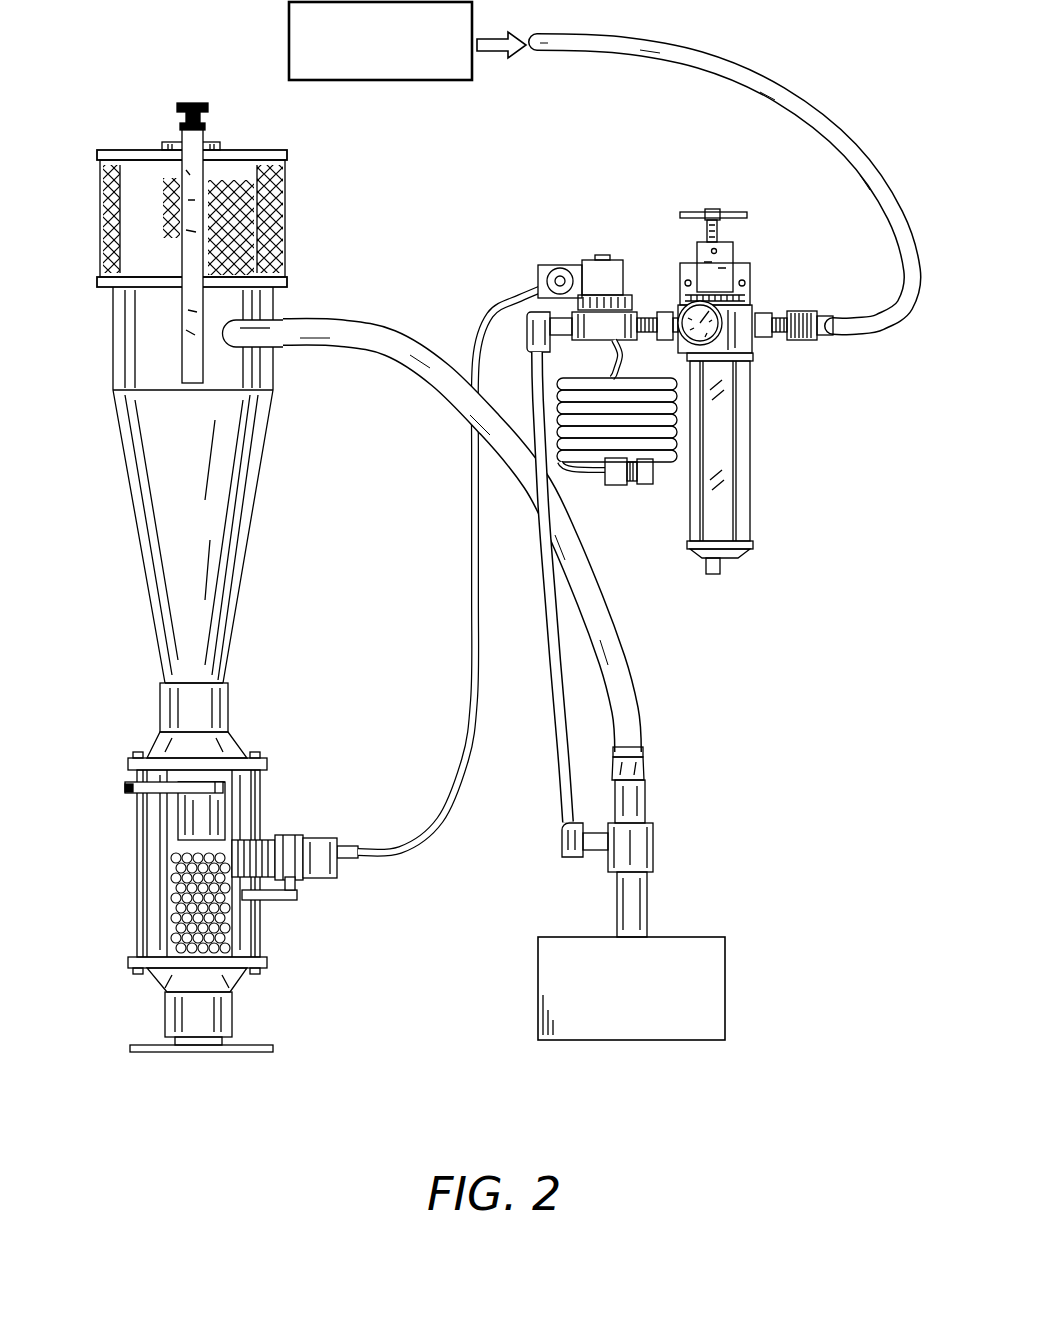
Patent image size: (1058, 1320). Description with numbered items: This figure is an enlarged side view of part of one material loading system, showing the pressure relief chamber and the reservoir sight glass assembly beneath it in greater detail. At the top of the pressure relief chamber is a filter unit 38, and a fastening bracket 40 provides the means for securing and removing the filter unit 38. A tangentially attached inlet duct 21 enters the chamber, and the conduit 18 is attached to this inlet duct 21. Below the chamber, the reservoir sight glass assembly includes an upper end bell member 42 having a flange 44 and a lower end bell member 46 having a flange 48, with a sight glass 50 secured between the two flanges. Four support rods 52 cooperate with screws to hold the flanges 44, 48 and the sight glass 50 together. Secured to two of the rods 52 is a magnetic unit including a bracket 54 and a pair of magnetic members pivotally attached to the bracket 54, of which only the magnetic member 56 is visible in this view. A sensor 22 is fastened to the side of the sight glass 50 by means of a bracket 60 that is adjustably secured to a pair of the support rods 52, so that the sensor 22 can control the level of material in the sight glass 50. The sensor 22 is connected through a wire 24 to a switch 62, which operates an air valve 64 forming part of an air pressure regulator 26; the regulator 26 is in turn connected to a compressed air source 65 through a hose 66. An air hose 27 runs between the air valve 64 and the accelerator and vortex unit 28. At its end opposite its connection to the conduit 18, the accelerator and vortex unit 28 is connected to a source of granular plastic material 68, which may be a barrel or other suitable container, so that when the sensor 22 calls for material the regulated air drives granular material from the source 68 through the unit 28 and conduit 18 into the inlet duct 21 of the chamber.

The conduit 18 is at (400, 330).
The inlet duct 21 is at (258, 348).
The sensor 22 is at (278, 838).
The wire 24 is at (468, 537).
The air pressure regulator 26 is at (681, 243).
The air hose 27 is at (555, 518).
The accelerator and vortex unit 28 is at (655, 852).
The filter unit 38 is at (285, 248).
The fastening bracket 40 is at (213, 131).
The upper end bell member 42 is at (230, 722).
The flange 44 is at (267, 765).
The lower end bell member 46 is at (232, 1016).
The flange 48 is at (128, 963).
The sight glass 50 is at (265, 790).
The support rods 52 is at (137, 868).
The bracket 54 is at (125, 787).
The magnetic member 56 is at (140, 798).
The bracket 60 is at (297, 893).
The switch 62 is at (562, 270).
The air valve 64 is at (628, 280).
The compressed air source 65 is at (372, 80).
The hose 66 is at (775, 90).
The source of granular plastic material 68 is at (693, 948).